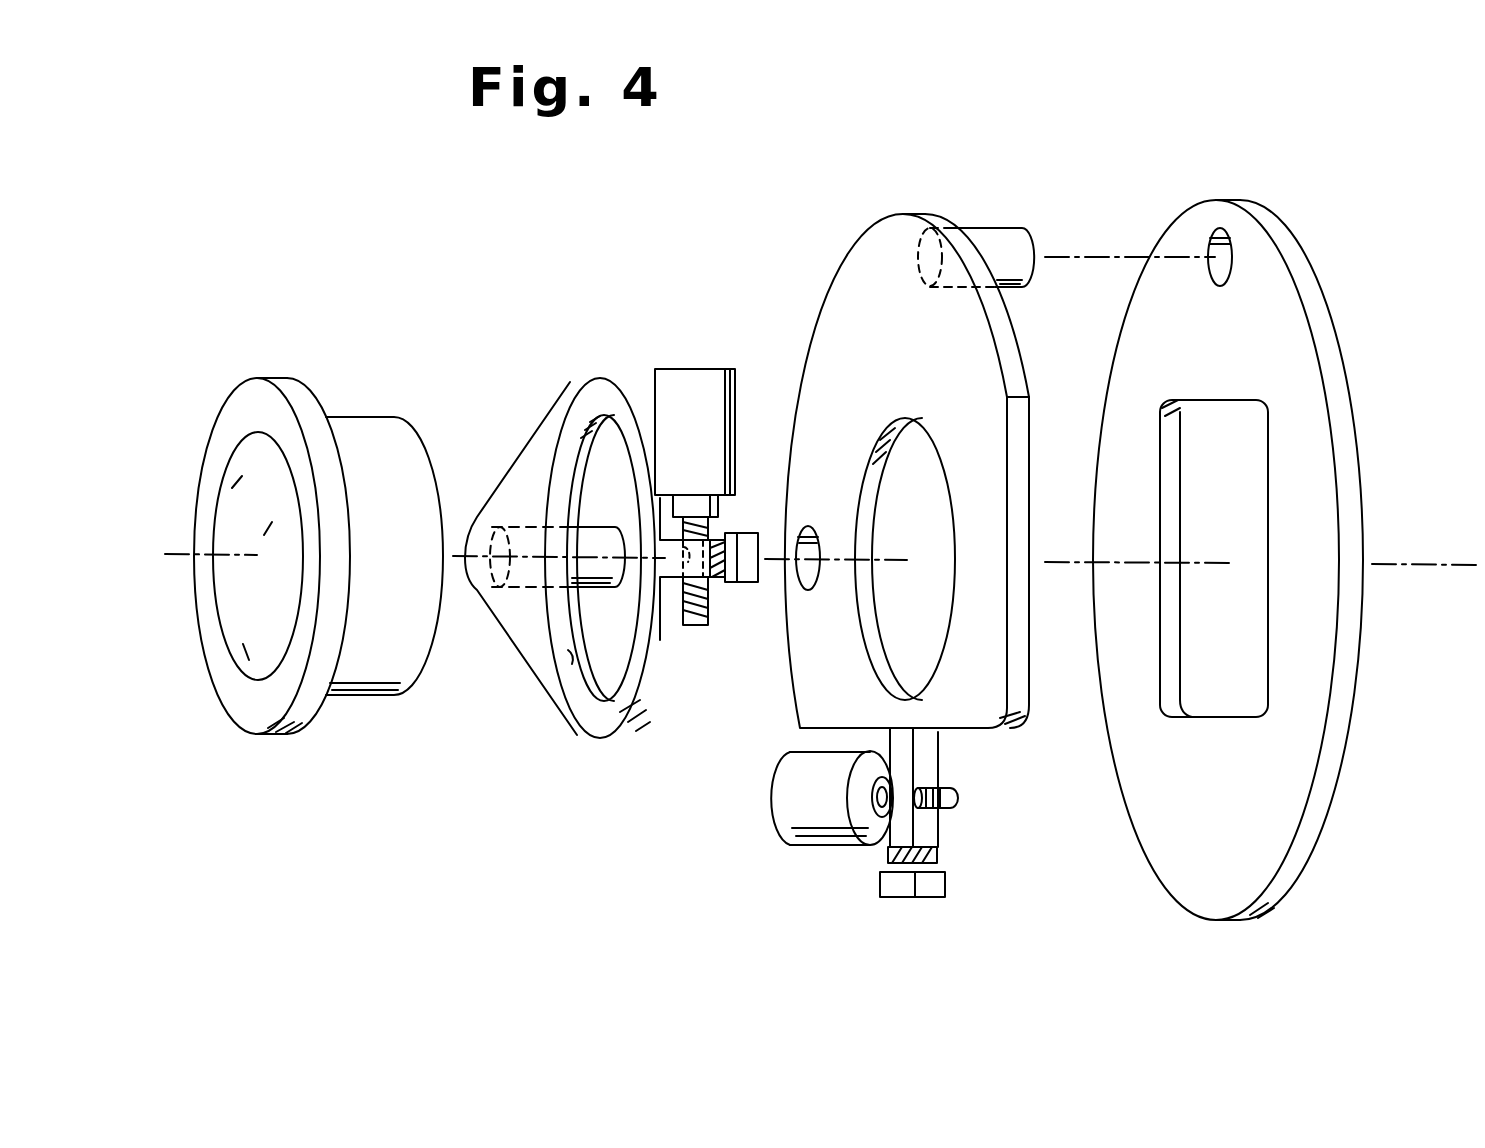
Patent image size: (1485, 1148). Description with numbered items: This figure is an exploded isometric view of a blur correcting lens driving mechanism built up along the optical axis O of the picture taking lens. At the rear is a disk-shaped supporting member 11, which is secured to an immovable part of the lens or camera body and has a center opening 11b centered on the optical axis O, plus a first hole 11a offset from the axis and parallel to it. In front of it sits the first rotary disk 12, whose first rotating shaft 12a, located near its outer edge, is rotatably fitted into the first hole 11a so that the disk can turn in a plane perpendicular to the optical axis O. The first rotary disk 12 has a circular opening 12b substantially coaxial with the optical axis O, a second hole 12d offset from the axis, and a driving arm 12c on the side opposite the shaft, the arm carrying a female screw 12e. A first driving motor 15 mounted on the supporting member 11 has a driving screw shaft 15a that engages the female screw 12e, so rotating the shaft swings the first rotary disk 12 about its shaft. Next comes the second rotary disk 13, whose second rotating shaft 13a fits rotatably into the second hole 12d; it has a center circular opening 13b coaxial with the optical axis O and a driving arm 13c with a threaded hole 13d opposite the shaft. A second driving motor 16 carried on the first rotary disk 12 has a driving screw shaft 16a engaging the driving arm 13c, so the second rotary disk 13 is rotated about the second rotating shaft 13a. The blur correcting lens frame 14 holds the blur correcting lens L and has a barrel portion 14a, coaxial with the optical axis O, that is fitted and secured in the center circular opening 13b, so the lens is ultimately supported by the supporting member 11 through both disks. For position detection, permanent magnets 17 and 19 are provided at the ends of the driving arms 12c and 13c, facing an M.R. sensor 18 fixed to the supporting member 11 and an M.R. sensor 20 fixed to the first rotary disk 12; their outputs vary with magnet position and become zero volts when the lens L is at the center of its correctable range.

The supporting member 11 is at (1360, 366).
The first hole 11a is at (1212, 247).
The center opening 11b is at (1262, 692).
The first rotary disk 12 is at (845, 269).
The first rotating shaft 12a is at (1003, 228).
The circular opening 12b is at (877, 450).
The driving arm 12c is at (932, 832).
The second hole 12d is at (805, 523).
The female screw 12e is at (938, 792).
The second rotary disk 13 is at (576, 382).
The second rotating shaft 13a is at (597, 533).
The center circular opening 13b is at (572, 650).
The driving arm 13c is at (713, 580).
The threaded hole 13d is at (680, 563).
The blur correcting lens frame 14 is at (281, 372).
The barrel portion 14a is at (372, 416).
The first driving motor 15 is at (775, 813).
The driving screw shaft 15a is at (962, 802).
The second driving motor 16 is at (683, 375).
The driving screw shaft 16a is at (690, 628).
The permanent magnet 17 is at (887, 855).
The M.R. sensor 18 is at (888, 882).
The permanent magnet 19 is at (718, 530).
The M.R. sensor 20 is at (743, 578).
The blur correcting lens L is at (232, 612).
The optical axis O is at (1400, 562).